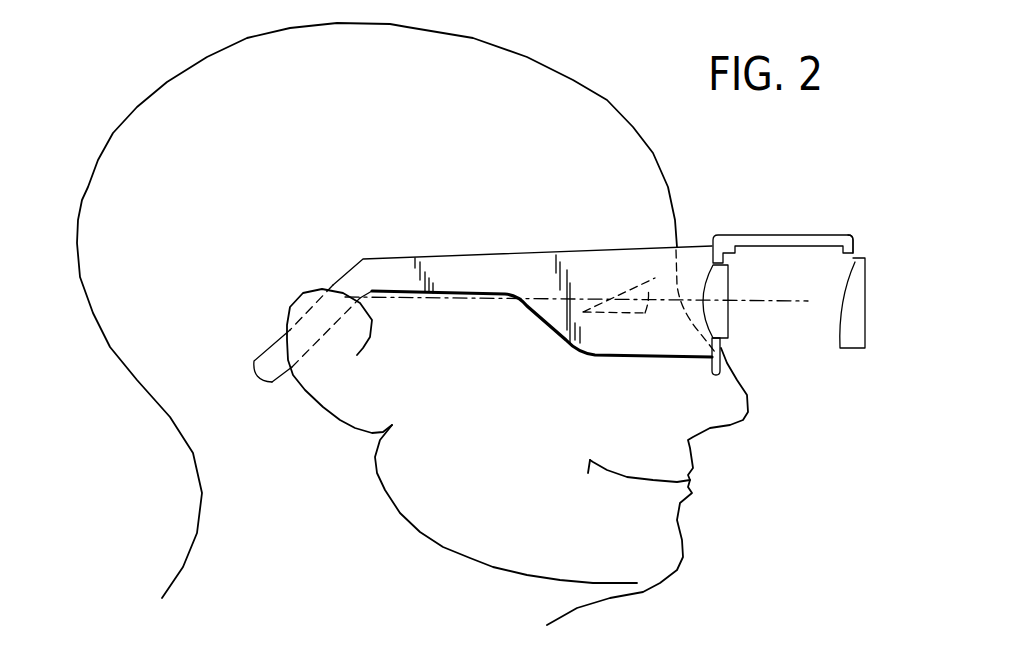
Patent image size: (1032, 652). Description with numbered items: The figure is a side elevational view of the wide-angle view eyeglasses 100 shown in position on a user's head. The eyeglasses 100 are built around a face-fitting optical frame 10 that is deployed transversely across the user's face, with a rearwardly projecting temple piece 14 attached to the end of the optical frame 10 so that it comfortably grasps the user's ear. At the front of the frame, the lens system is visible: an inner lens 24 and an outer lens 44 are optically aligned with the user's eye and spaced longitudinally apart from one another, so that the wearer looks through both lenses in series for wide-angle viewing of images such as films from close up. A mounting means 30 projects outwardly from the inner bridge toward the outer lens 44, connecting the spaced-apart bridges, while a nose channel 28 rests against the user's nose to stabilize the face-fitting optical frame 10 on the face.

The face-fitting optical frame 10 is at (695, 221).
The temple pieces 14 is at (469, 255).
The inner lenses 24 is at (730, 283).
The nose channel 28 is at (722, 347).
The mounting means 30 is at (765, 237).
The outer lenses 44 is at (867, 294).
The wide-angle view eyeglasses 100 is at (829, 210).